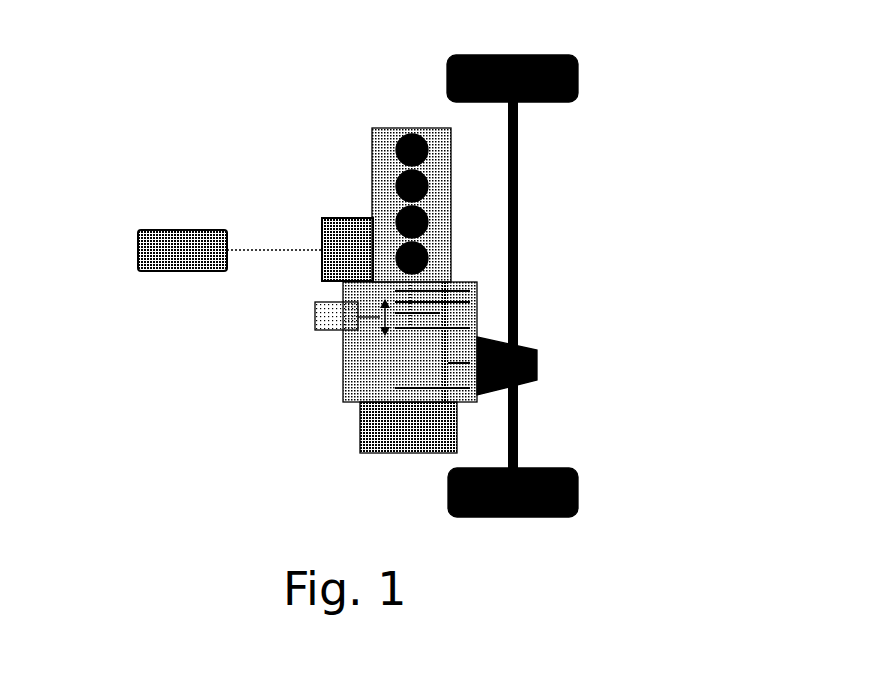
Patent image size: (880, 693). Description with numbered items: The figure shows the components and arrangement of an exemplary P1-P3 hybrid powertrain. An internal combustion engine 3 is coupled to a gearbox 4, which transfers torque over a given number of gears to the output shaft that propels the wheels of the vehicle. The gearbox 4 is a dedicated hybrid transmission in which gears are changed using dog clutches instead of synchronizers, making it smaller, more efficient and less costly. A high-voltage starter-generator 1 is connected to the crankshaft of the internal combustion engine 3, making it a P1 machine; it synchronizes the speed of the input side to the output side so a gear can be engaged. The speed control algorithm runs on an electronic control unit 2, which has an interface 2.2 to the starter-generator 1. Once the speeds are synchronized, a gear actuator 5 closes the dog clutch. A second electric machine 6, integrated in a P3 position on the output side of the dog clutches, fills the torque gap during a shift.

The high-voltage starter-generator 1 is at (315, 218).
The electronic control unit 2 is at (131, 247).
The interface 2.2 is at (262, 244).
The internal combustion engine 3 is at (364, 137).
The gearbox 4 is at (343, 354).
The gear actuator 5 is at (313, 315).
The second electric machine 6 is at (355, 432).